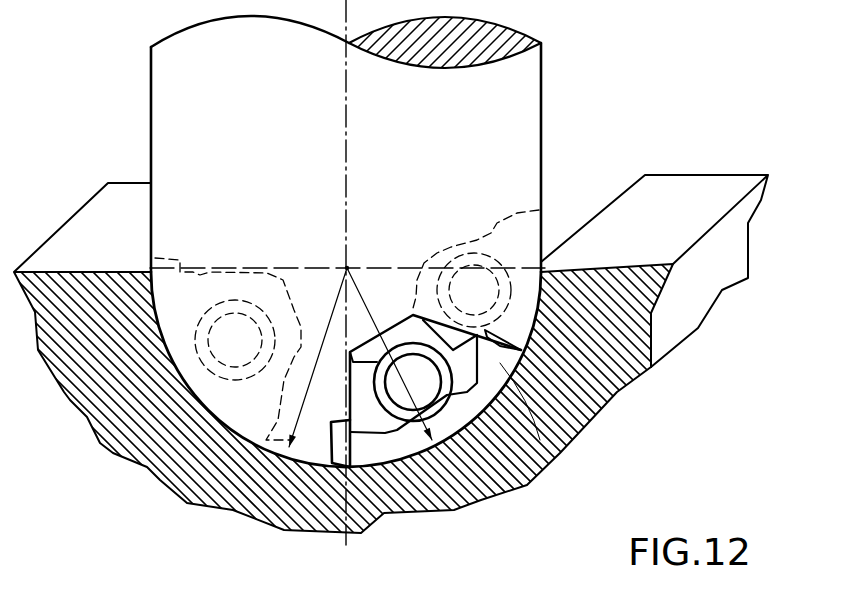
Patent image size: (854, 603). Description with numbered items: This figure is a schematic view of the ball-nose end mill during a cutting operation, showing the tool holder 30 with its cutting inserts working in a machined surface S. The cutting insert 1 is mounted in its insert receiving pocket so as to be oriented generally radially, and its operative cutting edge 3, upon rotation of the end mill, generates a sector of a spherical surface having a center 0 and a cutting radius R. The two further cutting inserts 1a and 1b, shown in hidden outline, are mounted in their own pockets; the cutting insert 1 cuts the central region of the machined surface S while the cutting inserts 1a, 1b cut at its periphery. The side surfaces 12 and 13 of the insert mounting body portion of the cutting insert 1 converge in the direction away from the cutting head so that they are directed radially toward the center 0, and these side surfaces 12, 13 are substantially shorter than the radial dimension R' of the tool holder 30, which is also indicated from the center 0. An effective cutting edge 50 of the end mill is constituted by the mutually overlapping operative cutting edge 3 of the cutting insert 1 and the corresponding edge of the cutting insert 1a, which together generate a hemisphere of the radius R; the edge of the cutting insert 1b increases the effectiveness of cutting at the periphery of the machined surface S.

The tool holder 30 is at (521, 100).
The side surface 12 is at (617, 393).
The machined surface S is at (621, 340).
The operative cutting edge 3 is at (389, 471).
The cutting insert 1 is at (557, 453).
The effective cutting edge 50 is at (427, 462).
The side surface 13 is at (332, 452).
The cutting insert 1b is at (177, 300).
The cutting insert 1a is at (517, 250).
The center of the spherical surface 0 is at (347, 268).
The cutting radius R is at (389, 354).
The radial dimension of the tool holder R' is at (318, 357).